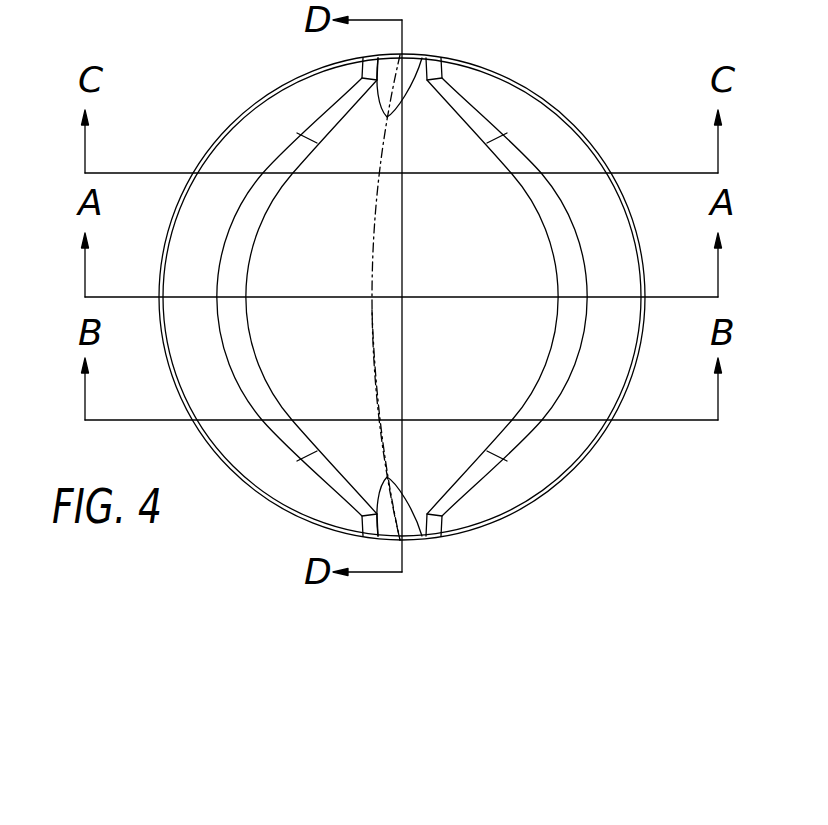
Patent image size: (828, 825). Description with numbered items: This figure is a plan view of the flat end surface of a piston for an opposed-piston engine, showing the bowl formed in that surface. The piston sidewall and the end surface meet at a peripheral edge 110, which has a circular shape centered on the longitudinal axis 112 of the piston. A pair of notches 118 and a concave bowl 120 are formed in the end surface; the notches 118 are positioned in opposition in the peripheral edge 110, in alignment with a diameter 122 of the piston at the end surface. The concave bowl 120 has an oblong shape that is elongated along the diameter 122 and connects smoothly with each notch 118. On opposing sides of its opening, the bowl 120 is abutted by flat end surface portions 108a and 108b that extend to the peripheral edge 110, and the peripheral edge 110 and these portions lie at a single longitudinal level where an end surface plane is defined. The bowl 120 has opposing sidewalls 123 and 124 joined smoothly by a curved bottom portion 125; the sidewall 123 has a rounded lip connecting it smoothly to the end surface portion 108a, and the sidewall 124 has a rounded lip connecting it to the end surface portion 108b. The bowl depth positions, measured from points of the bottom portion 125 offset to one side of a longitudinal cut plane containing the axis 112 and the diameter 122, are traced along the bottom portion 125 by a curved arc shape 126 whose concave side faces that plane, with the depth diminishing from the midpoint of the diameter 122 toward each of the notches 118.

The peripheral edge 110 is at (520, 84).
The flat end surface portion 108a is at (250, 133).
The flat end surface portion 108b is at (565, 136).
The notches 118 is at (410, 60).
The concave bowl 120 is at (492, 372).
The diameter 122 is at (402, 242).
The sidewall 123 is at (268, 249).
The sidewall 124 is at (537, 265).
The curved bottom portion 125 is at (323, 362).
The curved arc shape 126 is at (372, 273).
The longitudinal axis 112 is at (395, 380).